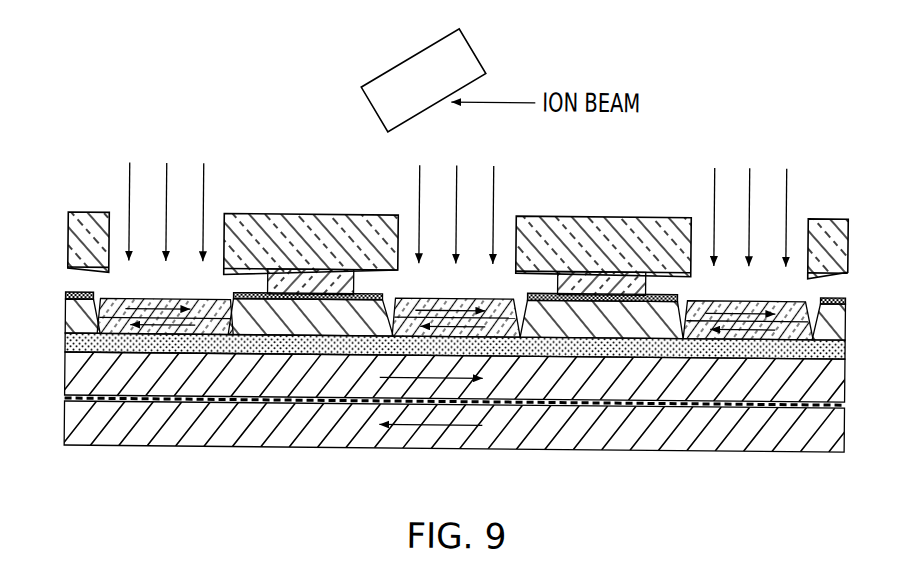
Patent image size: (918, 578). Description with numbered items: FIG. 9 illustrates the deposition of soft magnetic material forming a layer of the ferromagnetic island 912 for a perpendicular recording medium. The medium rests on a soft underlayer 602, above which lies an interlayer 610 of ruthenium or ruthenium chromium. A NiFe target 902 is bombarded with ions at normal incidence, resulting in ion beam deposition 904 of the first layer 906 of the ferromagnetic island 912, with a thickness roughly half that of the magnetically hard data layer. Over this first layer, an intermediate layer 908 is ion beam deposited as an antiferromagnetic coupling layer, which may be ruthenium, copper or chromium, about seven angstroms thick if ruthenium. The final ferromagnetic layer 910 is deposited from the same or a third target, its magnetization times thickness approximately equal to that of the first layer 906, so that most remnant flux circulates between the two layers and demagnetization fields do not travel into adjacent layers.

The NiFe target 902 is at (470, 45).
The ion beam deposition 904 is at (493, 173).
The first layer 906 is at (498, 338).
The intermediate layer 908 is at (790, 310).
The ferromagnetic layer 910 is at (701, 300).
The ferromagnetic island 912 is at (436, 292).
The interlayer 610 is at (65, 343).
The soft underlayer 602 is at (60, 350).